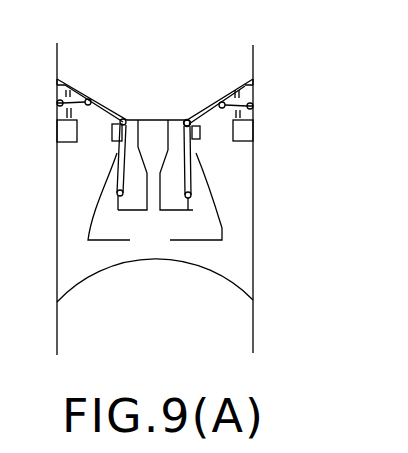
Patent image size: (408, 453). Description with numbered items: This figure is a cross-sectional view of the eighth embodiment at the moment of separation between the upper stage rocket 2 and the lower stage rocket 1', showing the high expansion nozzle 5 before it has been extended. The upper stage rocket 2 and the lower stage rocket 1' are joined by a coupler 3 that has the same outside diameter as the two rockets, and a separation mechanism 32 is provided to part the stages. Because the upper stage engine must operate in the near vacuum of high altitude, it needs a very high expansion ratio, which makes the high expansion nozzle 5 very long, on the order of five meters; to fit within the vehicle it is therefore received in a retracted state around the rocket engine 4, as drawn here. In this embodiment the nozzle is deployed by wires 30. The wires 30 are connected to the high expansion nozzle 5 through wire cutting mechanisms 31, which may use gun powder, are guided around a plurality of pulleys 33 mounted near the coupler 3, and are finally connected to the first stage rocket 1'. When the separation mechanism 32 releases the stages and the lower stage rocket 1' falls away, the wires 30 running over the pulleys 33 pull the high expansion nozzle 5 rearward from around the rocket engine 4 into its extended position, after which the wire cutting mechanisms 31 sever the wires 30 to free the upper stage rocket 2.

The lower stage rocket 1' is at (174, 304).
The upper stage rocket 2 is at (253, 66).
The coupler 3 is at (253, 90).
The rocket engine 4 is at (155, 200).
The high expansion nozzle 5 is at (223, 228).
The wires 30 is at (203, 108).
The wire cutting mechanisms 31 is at (200, 133).
The separation mechanism 32 is at (253, 130).
The pulleys 33 is at (182, 118).